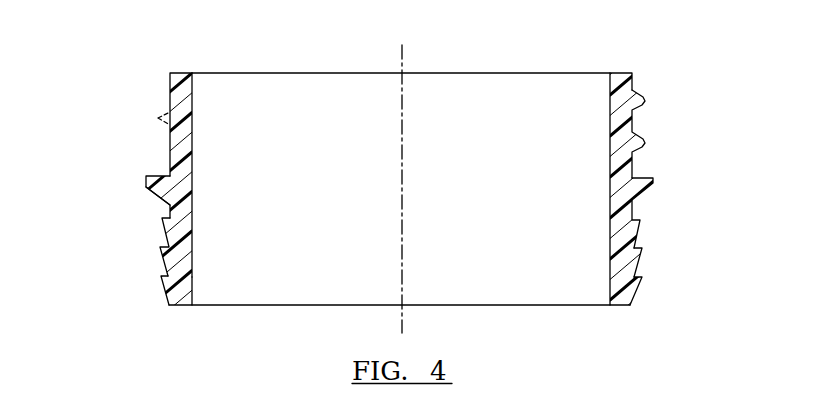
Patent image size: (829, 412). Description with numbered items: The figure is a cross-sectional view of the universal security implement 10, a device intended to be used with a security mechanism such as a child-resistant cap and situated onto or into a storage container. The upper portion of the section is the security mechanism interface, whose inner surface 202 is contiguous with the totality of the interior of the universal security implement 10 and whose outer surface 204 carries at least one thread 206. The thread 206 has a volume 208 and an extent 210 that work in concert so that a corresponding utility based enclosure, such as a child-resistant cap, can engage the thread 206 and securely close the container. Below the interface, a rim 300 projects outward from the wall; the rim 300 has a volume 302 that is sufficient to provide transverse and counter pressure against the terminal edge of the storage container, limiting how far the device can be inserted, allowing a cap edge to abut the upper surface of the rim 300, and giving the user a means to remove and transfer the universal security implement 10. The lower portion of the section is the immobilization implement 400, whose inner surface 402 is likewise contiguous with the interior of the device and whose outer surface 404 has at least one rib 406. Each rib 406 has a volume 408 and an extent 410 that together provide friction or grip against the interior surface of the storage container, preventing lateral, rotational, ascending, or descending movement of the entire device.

The universal security implement 10 is at (112, 57).
The inner surface 202 is at (193, 103).
The outer surface 204 is at (170, 140).
The thread 206 is at (645, 100).
The volume 208 is at (765, 100).
The extent 210 is at (765, 126).
The rim 300 is at (147, 178).
The volume 302 is at (698, 196).
The immobilization implement 400 is at (168, 210).
The inner surface 402 is at (193, 277).
The outer surface 404 is at (640, 207).
The rib 406 is at (160, 280).
The volume 408 is at (688, 278).
The extent 410 is at (688, 300).